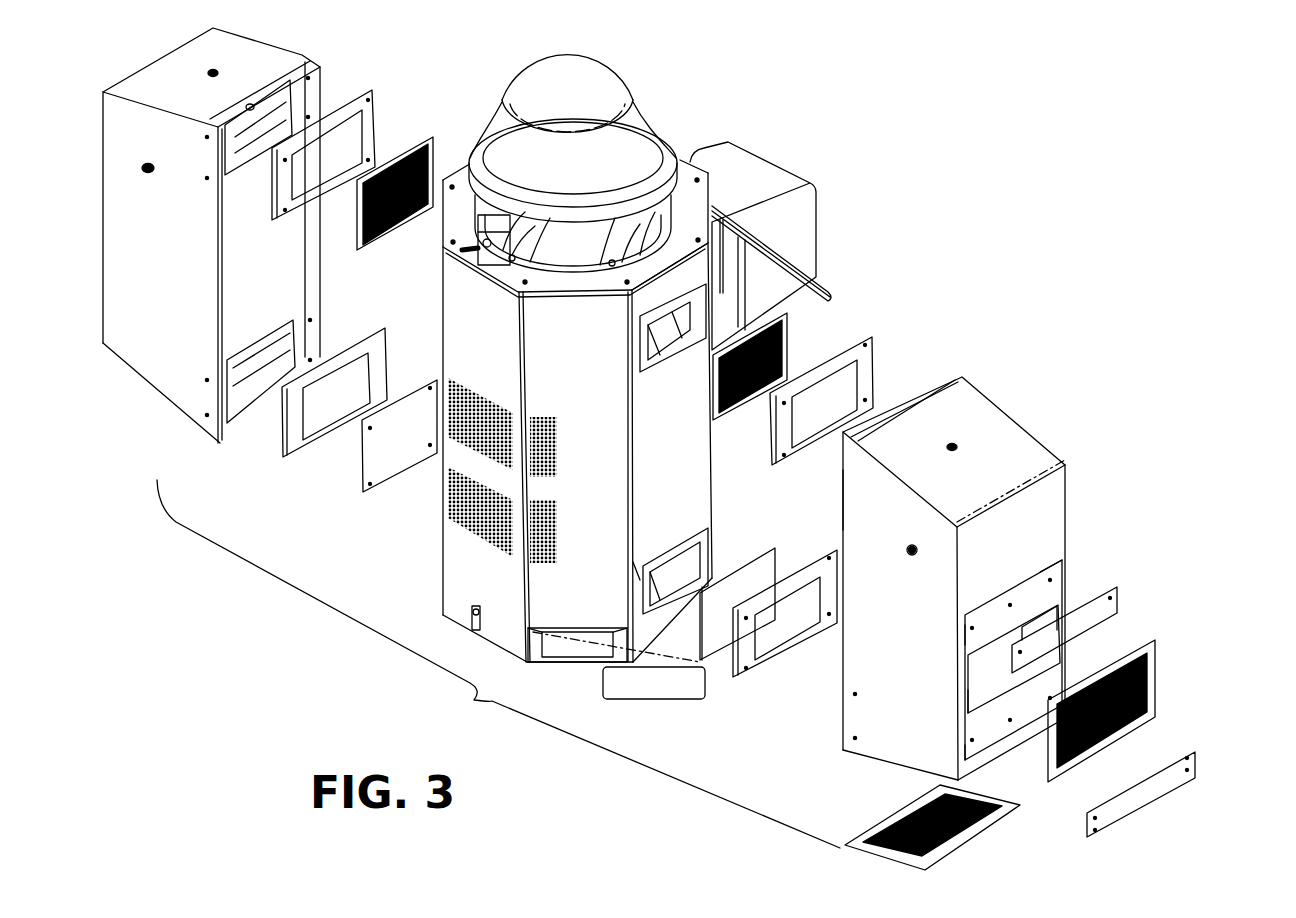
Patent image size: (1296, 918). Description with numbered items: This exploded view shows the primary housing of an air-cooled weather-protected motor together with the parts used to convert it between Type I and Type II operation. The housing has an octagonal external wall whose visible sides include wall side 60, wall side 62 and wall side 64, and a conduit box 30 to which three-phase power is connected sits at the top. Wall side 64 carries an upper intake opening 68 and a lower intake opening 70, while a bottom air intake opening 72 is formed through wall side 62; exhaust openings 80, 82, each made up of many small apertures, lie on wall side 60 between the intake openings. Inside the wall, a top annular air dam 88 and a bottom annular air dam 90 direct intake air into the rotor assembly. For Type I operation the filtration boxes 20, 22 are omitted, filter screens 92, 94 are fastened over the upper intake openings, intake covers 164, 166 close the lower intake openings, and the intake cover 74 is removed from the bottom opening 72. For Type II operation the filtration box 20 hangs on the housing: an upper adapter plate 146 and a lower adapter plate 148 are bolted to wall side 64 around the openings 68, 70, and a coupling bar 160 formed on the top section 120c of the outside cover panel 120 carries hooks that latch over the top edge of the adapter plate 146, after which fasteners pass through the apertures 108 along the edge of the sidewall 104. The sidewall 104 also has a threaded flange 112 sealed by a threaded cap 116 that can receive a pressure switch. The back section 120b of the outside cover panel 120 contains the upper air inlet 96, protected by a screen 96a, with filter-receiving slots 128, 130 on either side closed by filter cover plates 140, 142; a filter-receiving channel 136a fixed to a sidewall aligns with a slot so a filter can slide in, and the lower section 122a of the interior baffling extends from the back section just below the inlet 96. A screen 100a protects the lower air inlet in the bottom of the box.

The filtration box 20 is at (967, 550).
The filtration box 22 is at (121, 371).
The conduit box 30 is at (740, 153).
The wall side 60 is at (561, 358).
The wall side 62 is at (576, 476).
The wall side 64 is at (664, 428).
The upper intake opening 68 is at (632, 370).
The lower intake opening 70 is at (704, 546).
The bottom air intake opening 72 is at (568, 630).
The intake cover 74 is at (655, 688).
The exhaust opening 80 is at (437, 370).
The exhaust opening 82 is at (440, 510).
The top annular air dam 88 is at (639, 328).
The bottom annular air dam 90 is at (632, 572).
The filter screen 92 is at (435, 135).
The filter screen 94 is at (785, 350).
The upper air inlet 96 is at (1011, 646).
The screen 96a is at (1150, 680).
The screen 100a is at (967, 830).
The sidewall 104 is at (858, 706).
The apertures 108 is at (848, 498).
The threaded flange 112 is at (915, 560).
The threaded cap 116 is at (908, 551).
The outside cover panel 120 is at (967, 557).
The back section 120b is at (1011, 622).
The top section 120c is at (1002, 428).
The lower section of baffling 122a is at (960, 700).
The filter-receiving slot 128 is at (952, 762).
The filter-receiving slot 130 is at (953, 640).
The filter-receiving channel 136a is at (1062, 573).
The filter cover plate 140 is at (1120, 600).
The filter cover plate 142 is at (1195, 755).
The upper adapter plate 146 is at (874, 342).
The lower adapter plate 148 is at (795, 643).
The coupling bar 160 is at (864, 430).
The intake cover 164 is at (392, 460).
The intake cover 166 is at (747, 577).